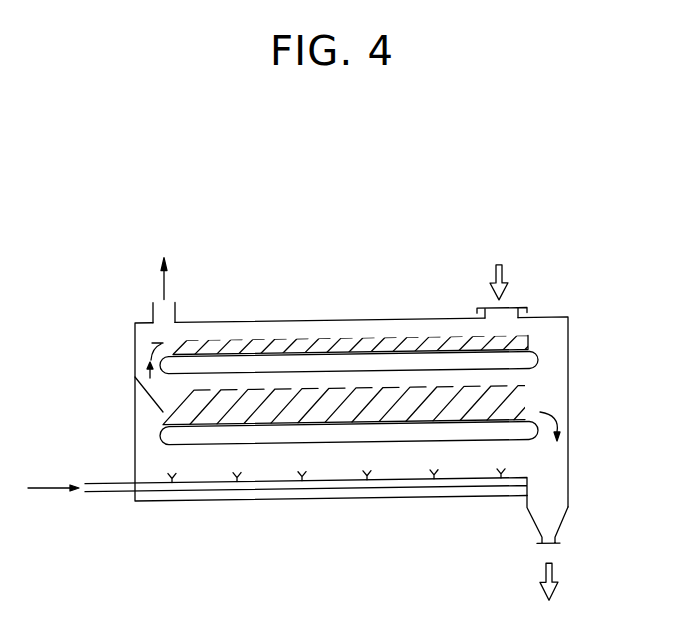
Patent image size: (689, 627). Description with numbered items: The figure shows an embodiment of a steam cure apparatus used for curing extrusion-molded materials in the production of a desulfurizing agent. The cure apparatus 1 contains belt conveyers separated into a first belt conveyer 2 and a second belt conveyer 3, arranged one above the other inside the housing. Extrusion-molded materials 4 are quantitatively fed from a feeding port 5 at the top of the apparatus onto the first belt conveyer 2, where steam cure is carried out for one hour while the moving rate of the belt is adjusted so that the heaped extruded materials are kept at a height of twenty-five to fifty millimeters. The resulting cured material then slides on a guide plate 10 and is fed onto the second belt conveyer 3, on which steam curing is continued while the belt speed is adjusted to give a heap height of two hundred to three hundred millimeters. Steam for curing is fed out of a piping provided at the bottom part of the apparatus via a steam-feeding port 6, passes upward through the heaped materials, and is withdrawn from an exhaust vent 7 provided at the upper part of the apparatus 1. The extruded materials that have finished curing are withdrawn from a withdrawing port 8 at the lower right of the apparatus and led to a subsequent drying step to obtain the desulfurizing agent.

The cure apparatus 1 is at (364, 319).
The first belt conveyer 2 is at (538, 358).
The second belt conveyer 3 is at (539, 439).
The extrusion-molded materials 4 is at (181, 351).
The feeding port 5 is at (517, 308).
The steam-feeding port 6 is at (43, 490).
The exhaust vent 7 is at (165, 310).
The withdrawing port 8 is at (553, 548).
The guide plate 10 is at (150, 396).